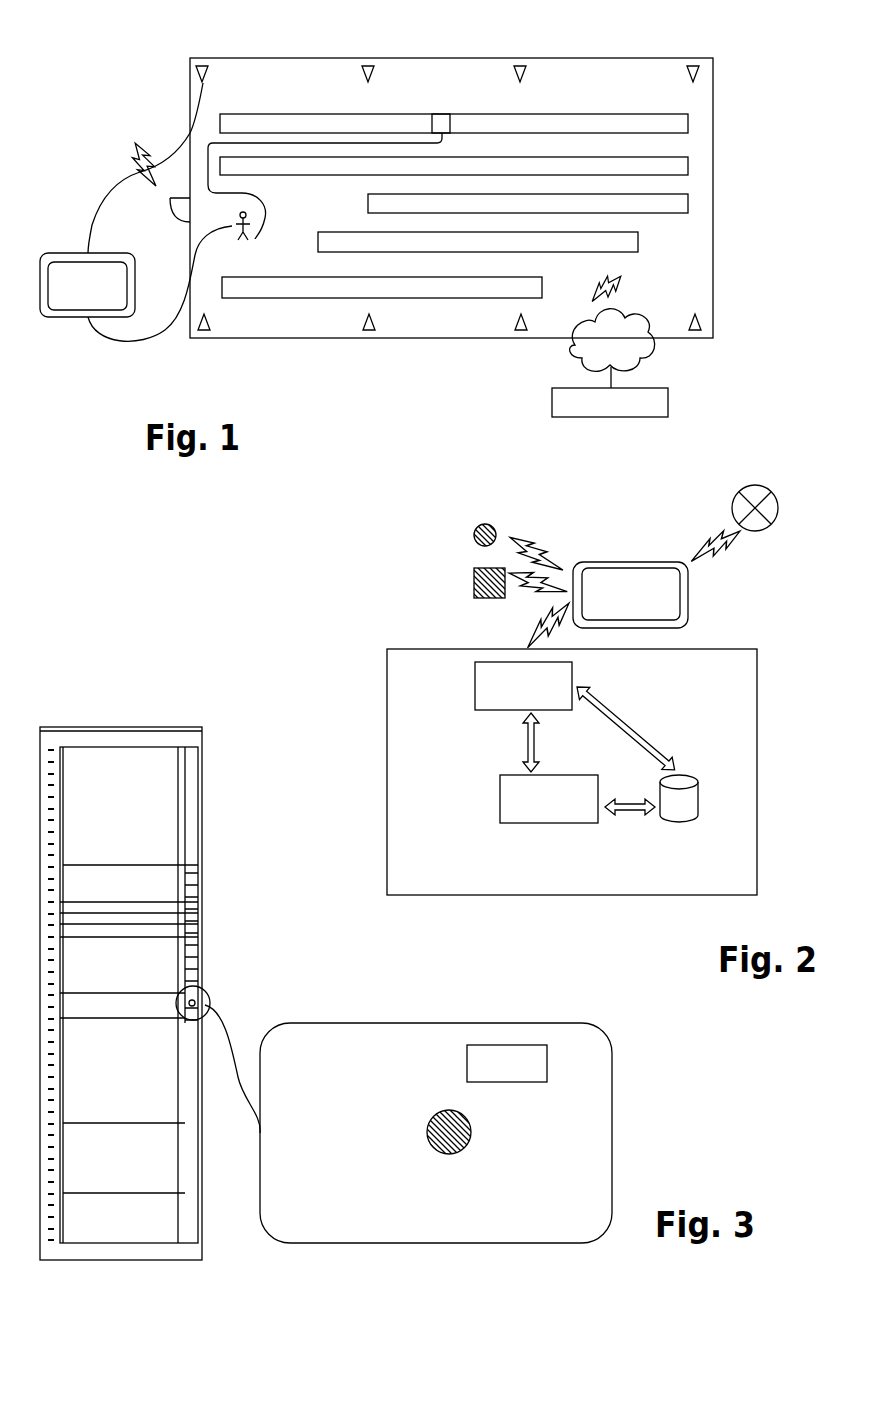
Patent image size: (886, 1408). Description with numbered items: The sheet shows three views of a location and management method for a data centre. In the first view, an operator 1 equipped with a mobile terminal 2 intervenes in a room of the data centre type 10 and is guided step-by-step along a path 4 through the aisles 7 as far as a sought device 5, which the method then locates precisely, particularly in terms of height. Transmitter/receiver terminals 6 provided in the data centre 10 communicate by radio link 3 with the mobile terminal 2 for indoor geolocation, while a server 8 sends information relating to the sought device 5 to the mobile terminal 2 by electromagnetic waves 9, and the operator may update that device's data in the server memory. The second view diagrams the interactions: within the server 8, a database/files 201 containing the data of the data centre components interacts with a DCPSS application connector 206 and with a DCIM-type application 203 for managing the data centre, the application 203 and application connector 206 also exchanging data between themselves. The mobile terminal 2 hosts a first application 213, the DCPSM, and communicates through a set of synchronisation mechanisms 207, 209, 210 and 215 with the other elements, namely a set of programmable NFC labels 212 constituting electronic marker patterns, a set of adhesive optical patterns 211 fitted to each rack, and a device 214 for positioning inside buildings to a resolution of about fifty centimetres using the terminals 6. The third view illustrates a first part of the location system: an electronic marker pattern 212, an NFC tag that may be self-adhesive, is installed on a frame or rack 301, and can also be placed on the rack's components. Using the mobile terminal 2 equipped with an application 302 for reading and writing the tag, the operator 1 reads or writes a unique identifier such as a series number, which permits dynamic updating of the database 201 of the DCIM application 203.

In FIG. 1, the operator 1 is at (243, 241).
In FIG. 1, the mobile terminal 2 is at (63, 317).
In FIG. 3, the mobile terminal 2 is at (307, 1023).
In FIG. 1, the radio link 3 is at (140, 150).
In FIG. 1, the path 4 is at (352, 140).
In FIG. 1, the sought device 5 is at (441, 112).
In FIG. 1, the transmitter/receiver terminals 6 is at (520, 65).
In FIG. 1, the aisles 7 is at (677, 124).
In FIG. 1, the server 8 is at (552, 403).
In FIG. 2, the server 8 is at (757, 720).
In FIG. 1, the electromagnetic waves 9 is at (620, 277).
In FIG. 1, the data centre 10 is at (300, 68).
In FIG. 2, the database/files 201 is at (693, 800).
In FIG. 2, the DCIM application 203 is at (500, 803).
In FIG. 2, the DCPSS application connector 206 is at (475, 686).
In FIG. 2, the synchronisation mechanism 207 is at (530, 633).
In FIG. 2, the synchronisation mechanism 209 is at (553, 545).
In FIG. 2, the synchronisation mechanism 210 is at (570, 572).
In FIG. 2, the adhesive optical patterns 211 is at (474, 583).
In FIG. 2, the electronic marker pattern 212 is at (474, 533).
In FIG. 3, the electronic marker pattern 212 is at (200, 987).
In FIG. 2, the DCPSM application 213 is at (637, 565).
In FIG. 2, the positioning device 214 is at (688, 595).
In FIG. 2, the synchronisation mechanism 215 is at (762, 485).
In FIG. 3, the rack 301 is at (165, 727).
In FIG. 3, the application 302 is at (503, 1062).